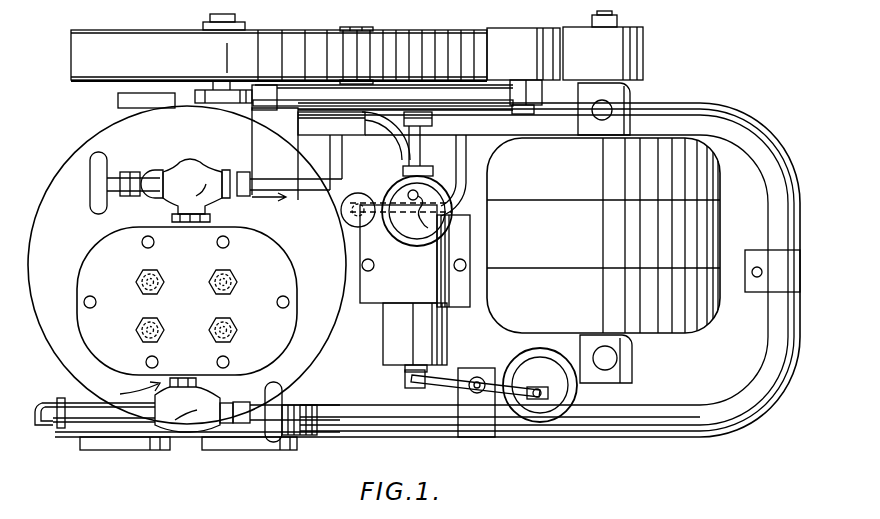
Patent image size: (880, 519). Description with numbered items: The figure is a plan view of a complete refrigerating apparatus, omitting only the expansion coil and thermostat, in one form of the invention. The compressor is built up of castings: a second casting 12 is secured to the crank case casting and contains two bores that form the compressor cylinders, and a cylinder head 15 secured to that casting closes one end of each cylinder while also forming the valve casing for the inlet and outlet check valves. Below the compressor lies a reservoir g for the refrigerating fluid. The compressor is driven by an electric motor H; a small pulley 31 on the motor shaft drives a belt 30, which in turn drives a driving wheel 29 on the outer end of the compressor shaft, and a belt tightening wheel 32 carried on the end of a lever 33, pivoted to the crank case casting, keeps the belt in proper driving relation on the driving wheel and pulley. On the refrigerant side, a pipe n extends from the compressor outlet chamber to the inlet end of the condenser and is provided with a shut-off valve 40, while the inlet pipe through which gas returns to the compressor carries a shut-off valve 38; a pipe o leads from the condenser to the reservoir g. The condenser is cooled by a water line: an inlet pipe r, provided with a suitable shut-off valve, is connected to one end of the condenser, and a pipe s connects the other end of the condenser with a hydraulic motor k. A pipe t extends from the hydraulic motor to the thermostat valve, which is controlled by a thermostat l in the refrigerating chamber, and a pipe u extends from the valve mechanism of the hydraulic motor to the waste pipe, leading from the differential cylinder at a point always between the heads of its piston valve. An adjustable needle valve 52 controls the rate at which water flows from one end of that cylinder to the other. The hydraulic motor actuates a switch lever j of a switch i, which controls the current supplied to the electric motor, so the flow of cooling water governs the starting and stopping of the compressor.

The second casting 12 is at (60, 179).
The cylinder head 15 is at (283, 284).
The driving wheel 29 is at (348, 30).
The belt 30 is at (413, 32).
The small pulley 31 is at (636, 31).
The belt tightening wheel 32 is at (522, 31).
The lever 33 is at (411, 97).
The shut-off valve 38 is at (190, 433).
The shut-off valve 40 is at (185, 172).
The adjustable needle valve 52 is at (359, 200).
The reservoir g is at (52, 403).
The electric motor H is at (722, 182).
The switch i is at (562, 393).
The switch lever j is at (455, 378).
The hydraulic motor k is at (390, 297).
The thermostat l is at (724, 404).
The pipe n is at (275, 179).
The pipe o is at (466, 154).
The inlet pipe r is at (408, 124).
The pipe s is at (395, 138).
The pipe t is at (401, 211).
The pipe u is at (418, 140).